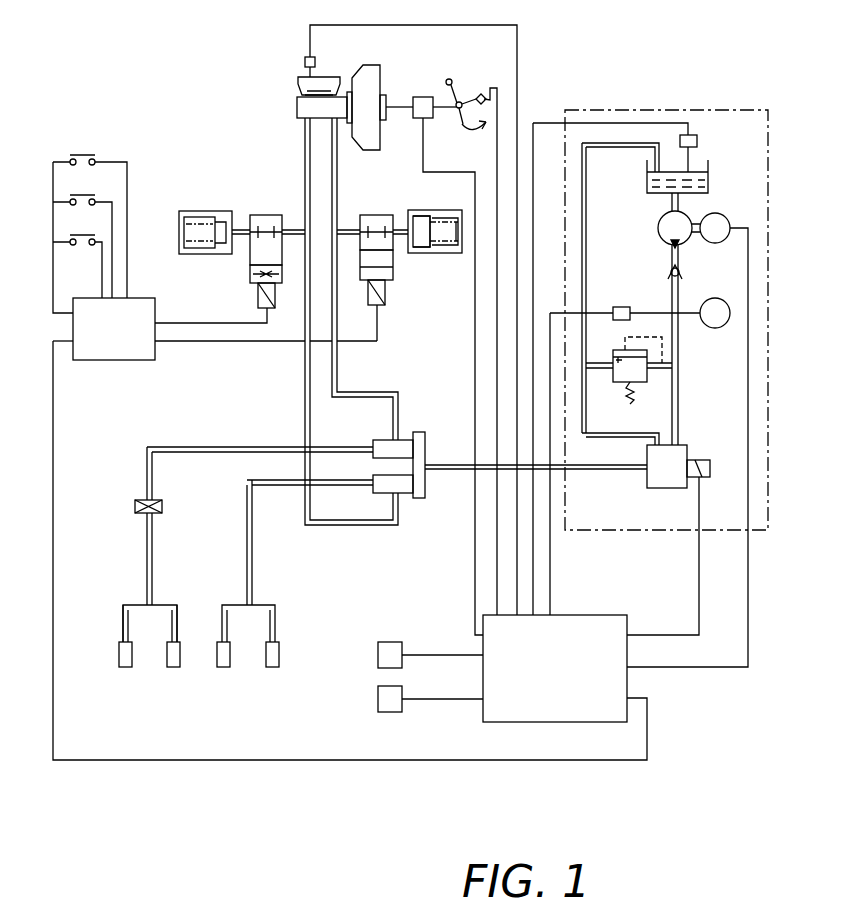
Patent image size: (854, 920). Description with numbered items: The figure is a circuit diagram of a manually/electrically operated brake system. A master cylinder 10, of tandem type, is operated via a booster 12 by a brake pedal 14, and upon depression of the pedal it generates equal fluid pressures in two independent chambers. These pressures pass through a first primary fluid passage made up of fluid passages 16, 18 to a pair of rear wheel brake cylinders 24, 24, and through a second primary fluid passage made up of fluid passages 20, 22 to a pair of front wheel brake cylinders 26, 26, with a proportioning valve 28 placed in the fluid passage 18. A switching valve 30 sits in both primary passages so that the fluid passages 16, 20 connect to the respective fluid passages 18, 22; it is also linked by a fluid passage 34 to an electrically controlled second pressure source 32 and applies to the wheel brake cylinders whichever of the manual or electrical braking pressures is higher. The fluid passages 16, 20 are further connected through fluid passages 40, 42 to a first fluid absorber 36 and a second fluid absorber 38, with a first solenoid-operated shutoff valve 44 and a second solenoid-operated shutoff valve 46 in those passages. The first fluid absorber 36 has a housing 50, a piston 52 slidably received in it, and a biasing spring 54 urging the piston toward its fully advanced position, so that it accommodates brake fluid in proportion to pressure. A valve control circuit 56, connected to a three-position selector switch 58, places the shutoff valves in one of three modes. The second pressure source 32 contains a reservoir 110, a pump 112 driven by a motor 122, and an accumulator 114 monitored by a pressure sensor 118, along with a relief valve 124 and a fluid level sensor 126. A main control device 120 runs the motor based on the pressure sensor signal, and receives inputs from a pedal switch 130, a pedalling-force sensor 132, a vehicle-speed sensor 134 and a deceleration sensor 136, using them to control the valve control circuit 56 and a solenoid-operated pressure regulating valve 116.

The master cylinder 10 is at (298, 108).
The booster 12 is at (375, 80).
The brake pedal 14 is at (465, 133).
The fluid passage 16 is at (366, 392).
The fluid passage 18 is at (205, 447).
The fluid passage 20 is at (307, 383).
The fluid passage 22 is at (278, 487).
The rear wheel brake cylinders 24 is at (174, 684).
The front wheel brake cylinders 26 is at (272, 684).
The proportioning valve 28 is at (162, 505).
The switching valve 30 is at (425, 497).
The second pressure source 32 is at (655, 110).
The fluid passage 34 is at (603, 471).
The first fluid absorber 36 is at (439, 287).
The second fluid absorber 38 is at (203, 192).
The fluid passage 40 is at (345, 228).
The fluid passage 42 is at (292, 228).
The first solenoid-operated shutoff valve 44 is at (364, 275).
The second solenoid-operated shutoff valve 46 is at (250, 260).
The housing 50 is at (418, 214).
The piston 52 is at (422, 248).
The biasing spring 54 is at (453, 248).
The valve control circuit 56 is at (112, 360).
The selector switch 58 is at (43, 197).
The reservoir 110 is at (708, 177).
The pump 112 is at (658, 228).
The accumulator 114 is at (713, 328).
The solenoid-operated pressure regulating valve 116 is at (663, 488).
The pressure sensor 118 is at (622, 307).
The main control device 120 is at (582, 622).
The motor 122 is at (713, 243).
The relief valve 124 is at (640, 383).
The fluid level sensor 126 is at (697, 140).
The pedal switch 130 is at (476, 95).
The pedalling-force sensor 132 is at (424, 100).
The vehicle-speed sensor 134 is at (389, 642).
The deceleration sensor 136 is at (388, 712).